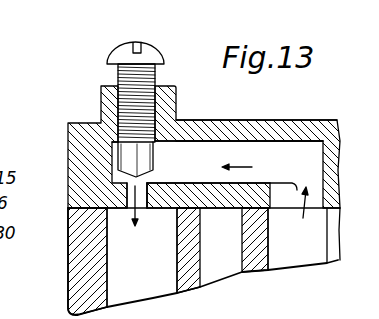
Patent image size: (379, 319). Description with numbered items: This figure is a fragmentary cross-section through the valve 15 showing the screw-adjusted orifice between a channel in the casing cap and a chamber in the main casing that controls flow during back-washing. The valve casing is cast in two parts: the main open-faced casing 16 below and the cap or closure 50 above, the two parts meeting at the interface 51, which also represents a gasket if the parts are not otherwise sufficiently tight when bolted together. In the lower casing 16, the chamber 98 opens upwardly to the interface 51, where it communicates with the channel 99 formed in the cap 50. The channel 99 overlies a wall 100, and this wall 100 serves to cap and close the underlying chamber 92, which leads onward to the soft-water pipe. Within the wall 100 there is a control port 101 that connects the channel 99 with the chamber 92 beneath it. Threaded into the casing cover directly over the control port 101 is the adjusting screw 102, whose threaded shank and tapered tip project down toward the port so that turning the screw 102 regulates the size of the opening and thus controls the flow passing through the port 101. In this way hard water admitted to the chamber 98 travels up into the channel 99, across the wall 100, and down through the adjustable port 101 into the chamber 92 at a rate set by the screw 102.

The cap 50 is at (66, 135).
The adjusting screw 102 is at (118, 70).
The channel 99 is at (237, 152).
The wall 100 is at (182, 188).
The control port 101 is at (143, 198).
The interface 51 is at (82, 210).
The valve 15 is at (68, 247).
The casing 16 is at (70, 272).
The chamber 92 is at (148, 286).
The chamber 98 is at (303, 250).